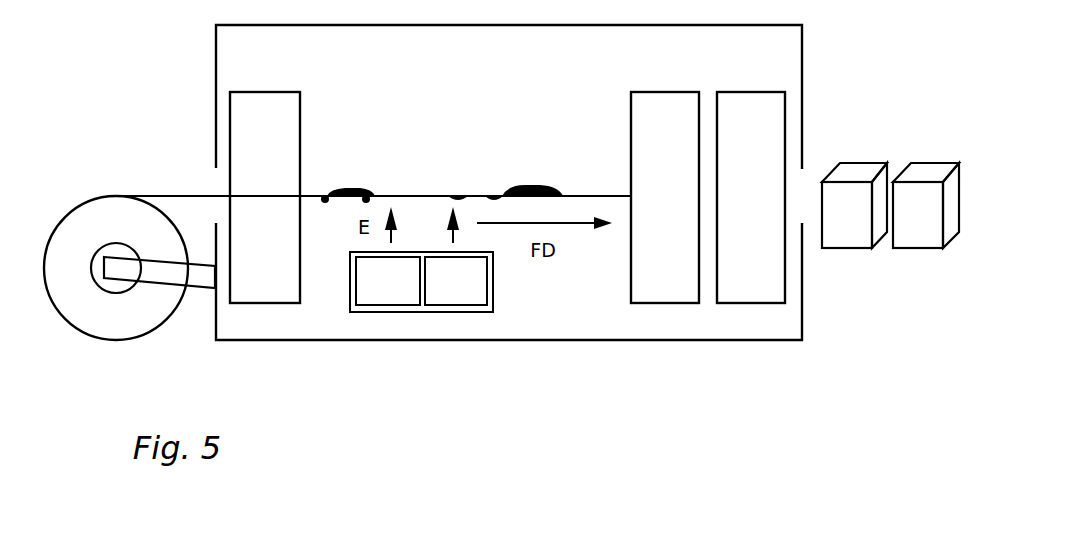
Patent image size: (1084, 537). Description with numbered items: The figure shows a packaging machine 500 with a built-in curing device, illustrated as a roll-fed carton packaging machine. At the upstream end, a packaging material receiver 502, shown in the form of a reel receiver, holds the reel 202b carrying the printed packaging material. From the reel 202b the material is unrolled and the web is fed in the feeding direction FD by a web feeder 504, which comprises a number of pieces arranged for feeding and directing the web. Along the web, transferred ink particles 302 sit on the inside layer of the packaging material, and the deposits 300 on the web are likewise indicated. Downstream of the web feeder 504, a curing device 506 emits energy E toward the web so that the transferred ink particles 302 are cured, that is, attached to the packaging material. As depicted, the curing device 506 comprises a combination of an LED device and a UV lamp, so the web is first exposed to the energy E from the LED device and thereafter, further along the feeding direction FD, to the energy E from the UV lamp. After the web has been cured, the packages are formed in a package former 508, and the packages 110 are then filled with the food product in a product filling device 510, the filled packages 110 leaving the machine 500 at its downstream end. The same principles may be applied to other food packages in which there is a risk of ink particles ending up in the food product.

The packaging machine 500 is at (146, 92).
The web feeder 504 is at (265, 197).
The package former 508 is at (665, 197).
The product filling device 510 is at (751, 197).
The printed material deposits 300 is at (347, 187).
The transferred ink particles 302 is at (327, 198).
The reel 202b is at (100, 315).
The packaging material receiver 502 is at (188, 276).
The curing device 506 is at (418, 312).
The packages 110 is at (897, 280).